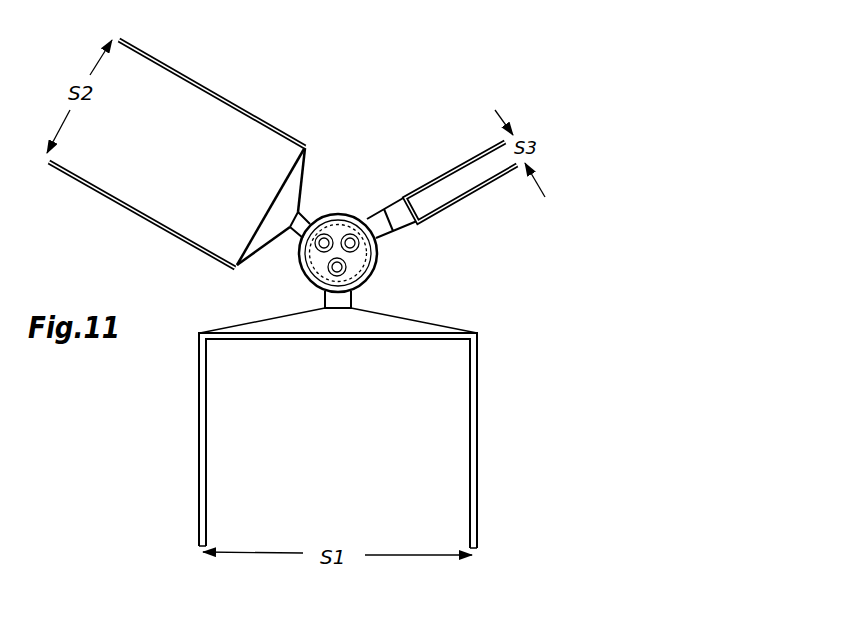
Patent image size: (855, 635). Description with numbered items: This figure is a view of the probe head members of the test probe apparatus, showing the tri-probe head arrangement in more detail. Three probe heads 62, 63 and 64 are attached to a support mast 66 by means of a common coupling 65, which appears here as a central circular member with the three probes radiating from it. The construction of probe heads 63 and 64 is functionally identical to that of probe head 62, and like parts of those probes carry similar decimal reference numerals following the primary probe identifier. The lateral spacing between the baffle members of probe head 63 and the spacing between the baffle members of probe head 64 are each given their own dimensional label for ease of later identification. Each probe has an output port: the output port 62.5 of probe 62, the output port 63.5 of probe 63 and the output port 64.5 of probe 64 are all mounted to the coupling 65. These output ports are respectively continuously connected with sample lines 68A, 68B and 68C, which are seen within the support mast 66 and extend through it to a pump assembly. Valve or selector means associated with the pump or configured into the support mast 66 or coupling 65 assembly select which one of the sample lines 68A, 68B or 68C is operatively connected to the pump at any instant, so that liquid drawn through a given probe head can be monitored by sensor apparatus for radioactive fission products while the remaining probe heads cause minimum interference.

The probe head 62 is at (480, 420).
The output port 62.5 is at (352, 298).
The probe head 63 is at (267, 117).
The output port 63.5 is at (310, 215).
The probe head 64 is at (457, 161).
The output port 64.5 is at (377, 217).
The common coupling 65 is at (345, 213).
The support mast 66 is at (367, 271).
The sample line 68A is at (327, 271).
The sample line 68B is at (309, 269).
The sample line 68C is at (360, 246).